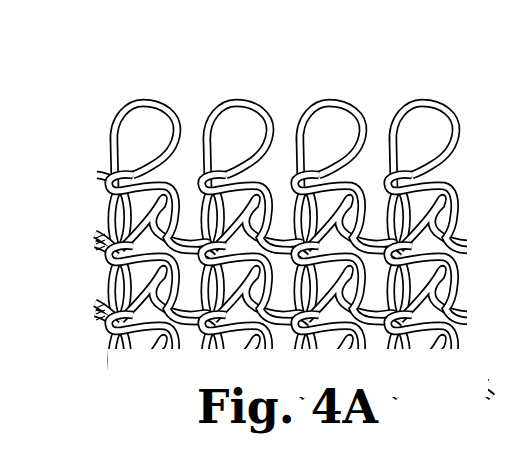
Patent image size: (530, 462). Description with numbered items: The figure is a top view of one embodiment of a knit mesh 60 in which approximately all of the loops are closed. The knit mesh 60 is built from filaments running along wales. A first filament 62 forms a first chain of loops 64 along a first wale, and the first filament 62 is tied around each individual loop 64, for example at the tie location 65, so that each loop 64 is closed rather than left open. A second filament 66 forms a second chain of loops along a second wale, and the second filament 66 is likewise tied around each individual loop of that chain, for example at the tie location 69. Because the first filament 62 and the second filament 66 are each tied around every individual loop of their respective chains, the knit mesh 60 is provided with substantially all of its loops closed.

The knit mesh 60 is at (281, 207).
The first filament 62 is at (104, 239).
The loop 64 is at (112, 147).
The tie location 65 is at (109, 183).
The second filament 66 is at (108, 324).
The tie location 69 is at (110, 254).